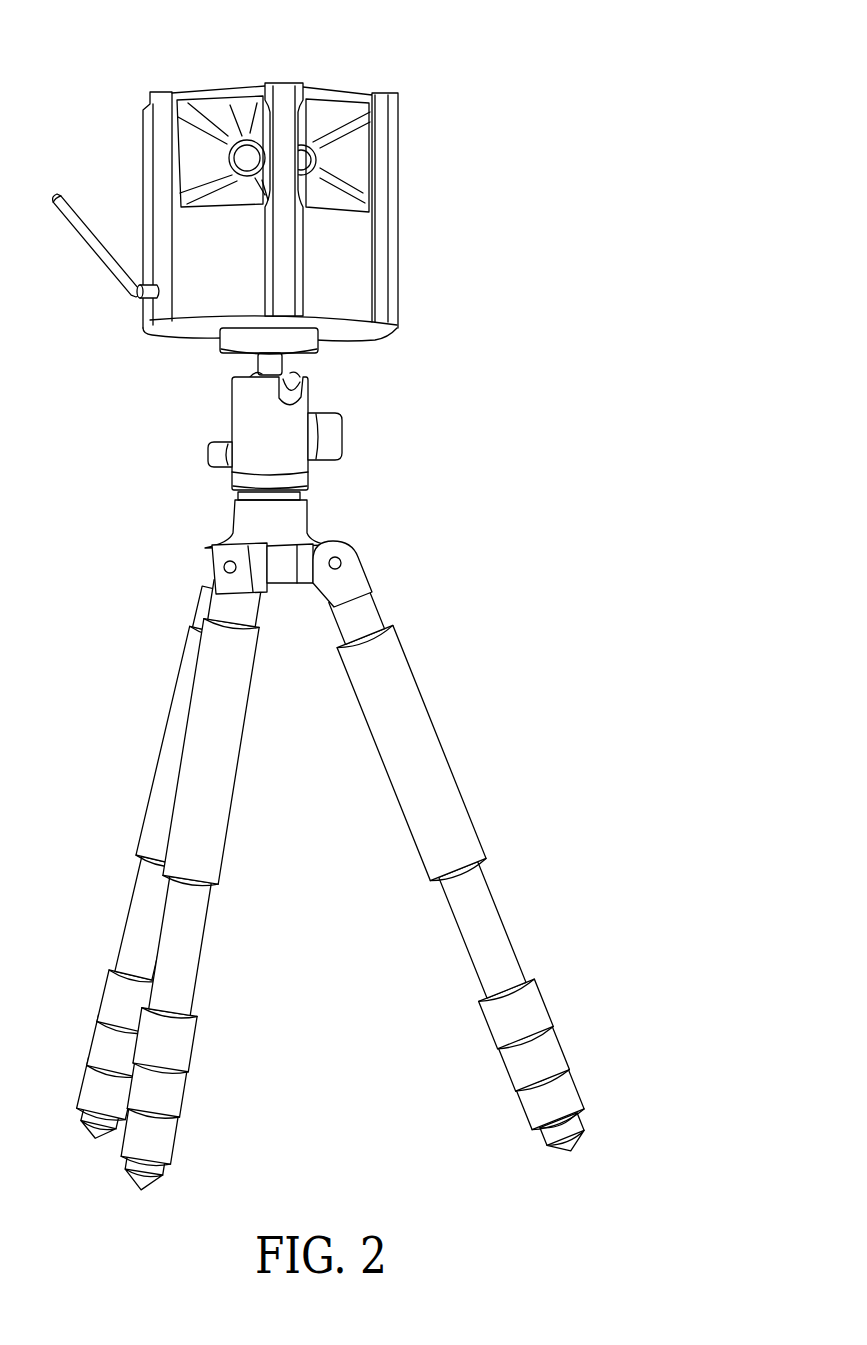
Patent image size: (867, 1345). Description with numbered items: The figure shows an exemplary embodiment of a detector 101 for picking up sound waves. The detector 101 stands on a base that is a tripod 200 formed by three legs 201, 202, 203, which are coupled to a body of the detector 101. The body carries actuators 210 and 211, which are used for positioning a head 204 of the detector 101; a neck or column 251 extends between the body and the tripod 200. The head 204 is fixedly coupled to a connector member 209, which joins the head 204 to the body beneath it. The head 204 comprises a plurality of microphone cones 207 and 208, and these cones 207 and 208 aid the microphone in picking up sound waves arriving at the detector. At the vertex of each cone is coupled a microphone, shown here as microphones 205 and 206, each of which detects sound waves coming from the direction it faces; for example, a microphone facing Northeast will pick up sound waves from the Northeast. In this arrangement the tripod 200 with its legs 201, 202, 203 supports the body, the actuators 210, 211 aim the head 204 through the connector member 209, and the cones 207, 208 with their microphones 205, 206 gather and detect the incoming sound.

The detector 101 is at (269, 175).
The tripod 200 is at (331, 863).
The tripod leg 201 is at (415, 713).
The leg 202 is at (212, 810).
The leg 203 is at (155, 820).
The head 204 is at (333, 93).
The microphone 205 is at (247, 155).
The microphone 206 is at (304, 160).
The microphone cone 207 is at (192, 162).
The microphone cone 208 is at (362, 168).
The connector member 209 is at (318, 349).
The actuator 210 is at (344, 437).
The actuator 211 is at (208, 453).
The center column 251 is at (312, 510).